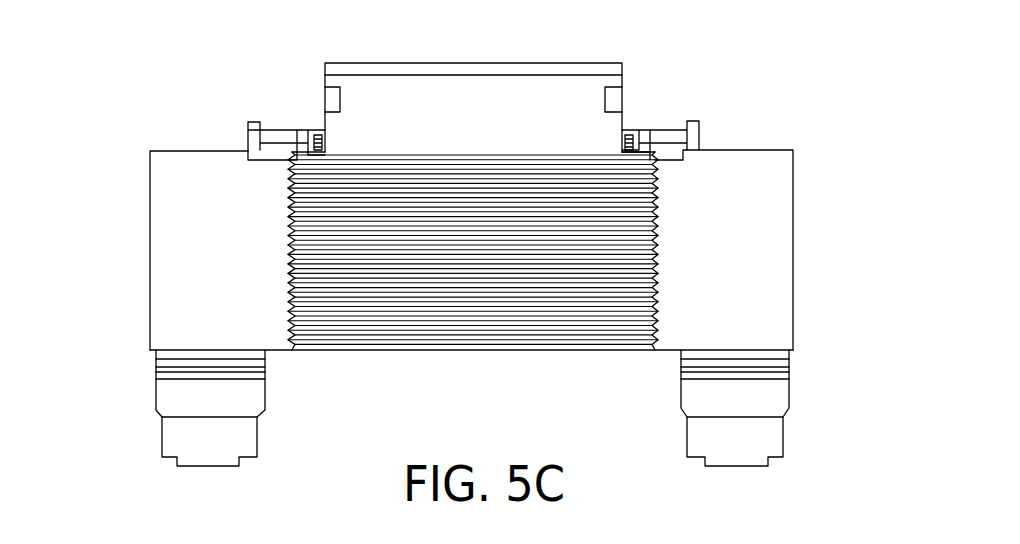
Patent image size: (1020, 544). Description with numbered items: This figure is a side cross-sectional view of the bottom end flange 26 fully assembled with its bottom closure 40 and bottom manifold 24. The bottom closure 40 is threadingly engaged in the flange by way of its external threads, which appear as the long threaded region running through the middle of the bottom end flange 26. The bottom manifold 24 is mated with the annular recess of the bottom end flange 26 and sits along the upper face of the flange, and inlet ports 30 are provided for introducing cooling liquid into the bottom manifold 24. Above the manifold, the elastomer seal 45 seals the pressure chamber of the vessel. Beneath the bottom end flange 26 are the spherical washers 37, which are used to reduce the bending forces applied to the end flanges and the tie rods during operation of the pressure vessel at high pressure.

The bottom manifold 24 is at (251, 149).
The bottom end flange 26 is at (757, 257).
The inlet ports 30 is at (275, 140).
The spherical washers 37 is at (768, 388).
The bottom closure 40 is at (465, 345).
The elastomer seal 45 is at (331, 98).